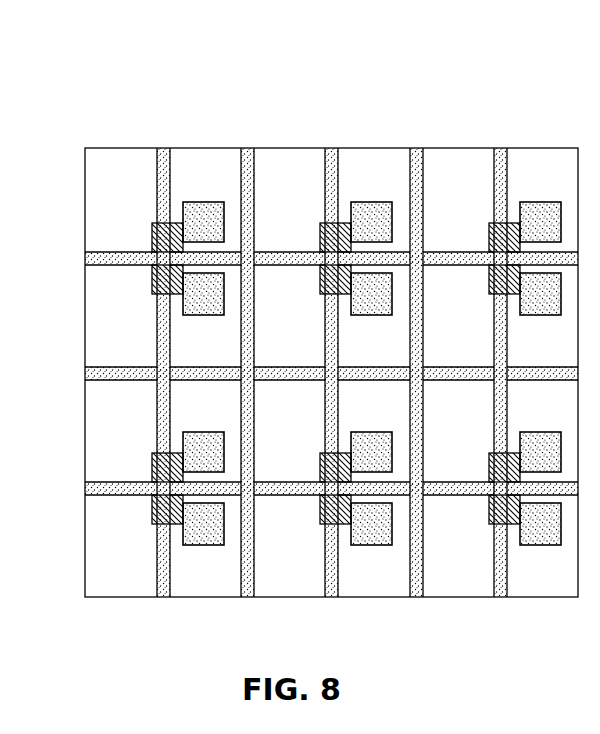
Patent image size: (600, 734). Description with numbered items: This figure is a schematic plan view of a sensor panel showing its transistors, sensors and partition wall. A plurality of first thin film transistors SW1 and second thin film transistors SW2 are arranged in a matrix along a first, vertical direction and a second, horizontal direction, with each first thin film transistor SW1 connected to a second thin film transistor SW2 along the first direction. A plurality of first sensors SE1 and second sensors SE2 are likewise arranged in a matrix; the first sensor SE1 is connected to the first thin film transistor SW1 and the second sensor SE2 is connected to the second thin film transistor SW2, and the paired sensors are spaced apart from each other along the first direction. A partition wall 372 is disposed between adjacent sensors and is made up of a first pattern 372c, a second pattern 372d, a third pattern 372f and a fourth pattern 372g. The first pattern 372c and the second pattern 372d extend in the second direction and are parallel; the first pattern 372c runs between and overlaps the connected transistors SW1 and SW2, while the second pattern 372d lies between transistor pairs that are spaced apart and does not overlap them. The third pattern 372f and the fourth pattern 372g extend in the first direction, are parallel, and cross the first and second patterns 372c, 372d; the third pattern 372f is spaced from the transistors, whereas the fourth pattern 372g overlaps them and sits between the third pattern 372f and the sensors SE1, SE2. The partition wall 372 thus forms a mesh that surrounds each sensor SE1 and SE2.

The partition wall 372 is at (517, 72).
The first pattern 372c is at (373, 207).
The second pattern 372d is at (386, 367).
The third pattern 372f is at (423, 190).
The fourth pattern 372g is at (507, 180).
The first thin film transistor SW1 is at (170, 223).
The second thin film transistor SW2 is at (181, 303).
The first sensor SE1 is at (203, 210).
The second sensor SE2 is at (207, 305).